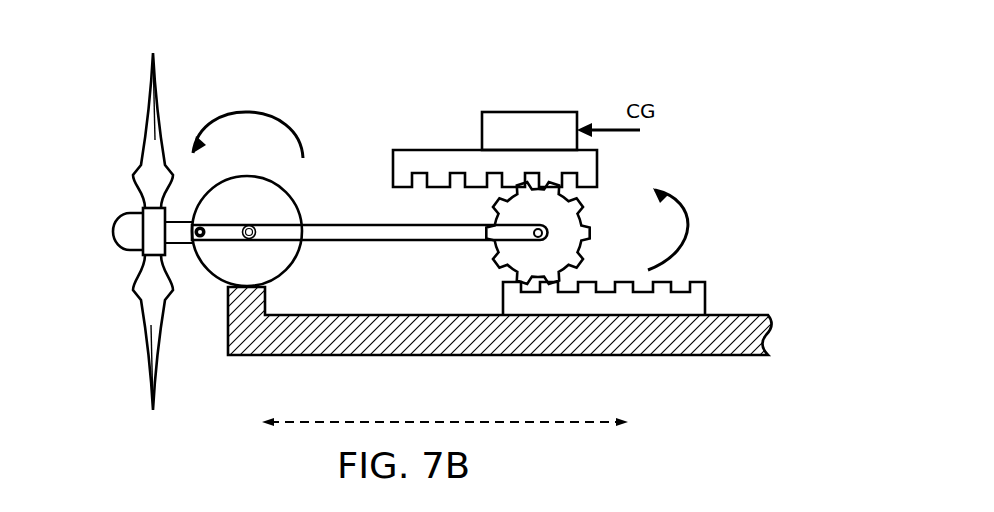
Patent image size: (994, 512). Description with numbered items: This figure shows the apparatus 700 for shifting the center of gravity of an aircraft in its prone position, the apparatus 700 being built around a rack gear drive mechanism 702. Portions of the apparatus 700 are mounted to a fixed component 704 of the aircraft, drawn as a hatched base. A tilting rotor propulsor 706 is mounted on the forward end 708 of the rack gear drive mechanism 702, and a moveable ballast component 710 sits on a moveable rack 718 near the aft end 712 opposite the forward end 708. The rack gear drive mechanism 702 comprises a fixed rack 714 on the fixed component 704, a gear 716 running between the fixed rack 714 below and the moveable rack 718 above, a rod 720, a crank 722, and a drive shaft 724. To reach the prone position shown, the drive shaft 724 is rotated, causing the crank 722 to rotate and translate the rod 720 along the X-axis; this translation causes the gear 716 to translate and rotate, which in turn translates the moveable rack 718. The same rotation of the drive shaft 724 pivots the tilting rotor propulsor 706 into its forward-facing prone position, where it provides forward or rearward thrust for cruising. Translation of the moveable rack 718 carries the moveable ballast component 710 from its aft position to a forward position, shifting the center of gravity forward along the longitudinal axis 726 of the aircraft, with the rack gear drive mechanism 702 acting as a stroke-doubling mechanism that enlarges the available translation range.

The apparatus 700 is at (720, 62).
The rack gear drive mechanism 702 is at (700, 190).
The fixed component 704 is at (718, 355).
The tilting rotor propulsor 706 is at (118, 220).
The forward end 708 is at (84, 277).
The moveable ballast component 710 is at (500, 113).
The aft end 712 is at (780, 250).
The fixed rack 714 is at (515, 302).
The gear 716 is at (507, 212).
The moveable rack 718 is at (437, 148).
The rod 720 is at (338, 222).
The crank 722 is at (241, 222).
The drive shaft 724 is at (275, 262).
The longitudinal axis 726 is at (305, 403).